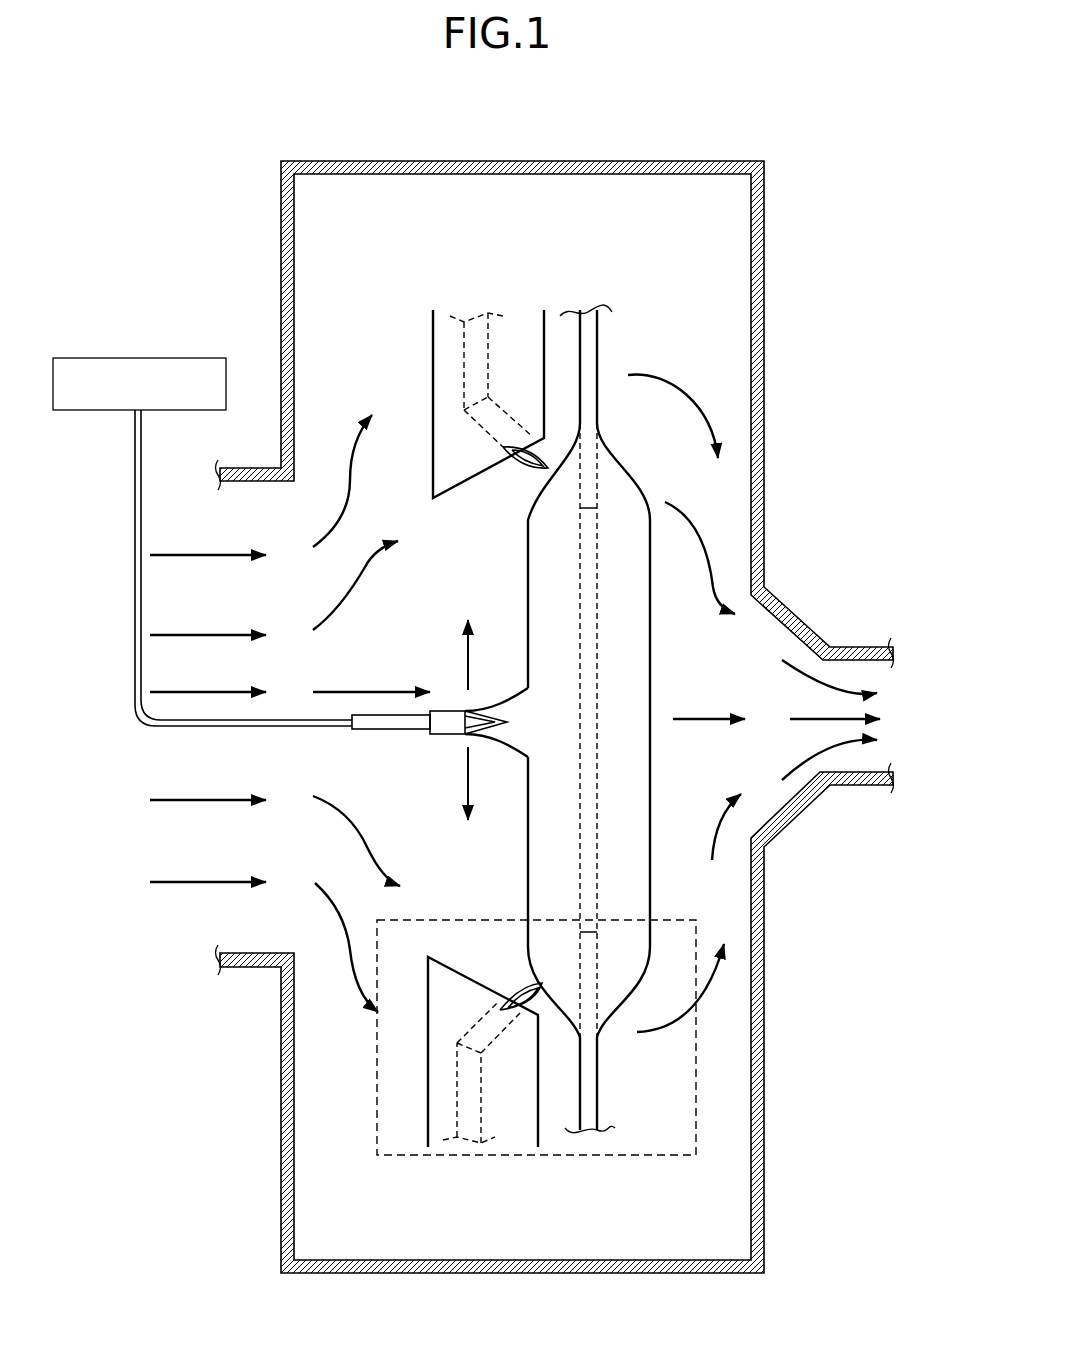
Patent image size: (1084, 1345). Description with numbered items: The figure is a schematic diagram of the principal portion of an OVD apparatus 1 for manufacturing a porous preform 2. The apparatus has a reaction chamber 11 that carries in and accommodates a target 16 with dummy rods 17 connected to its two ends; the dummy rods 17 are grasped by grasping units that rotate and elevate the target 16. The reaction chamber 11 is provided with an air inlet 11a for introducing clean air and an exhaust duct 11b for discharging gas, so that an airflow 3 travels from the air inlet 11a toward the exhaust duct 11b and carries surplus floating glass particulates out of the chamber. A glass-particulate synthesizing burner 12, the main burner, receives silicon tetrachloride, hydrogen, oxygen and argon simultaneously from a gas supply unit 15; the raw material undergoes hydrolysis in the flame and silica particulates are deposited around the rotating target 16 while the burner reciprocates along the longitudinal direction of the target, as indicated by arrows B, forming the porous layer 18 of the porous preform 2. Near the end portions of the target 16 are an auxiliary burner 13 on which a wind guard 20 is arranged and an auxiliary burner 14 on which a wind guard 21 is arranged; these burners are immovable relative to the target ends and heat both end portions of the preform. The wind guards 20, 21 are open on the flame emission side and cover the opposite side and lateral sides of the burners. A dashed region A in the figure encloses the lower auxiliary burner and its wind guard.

The OVD apparatus 1 is at (386, 138).
The porous preform 2 is at (574, 708).
The airflow 3 is at (348, 495).
The reaction chamber 11 is at (660, 161).
The air inlet 11a is at (245, 483).
The exhaust duct 11b is at (900, 680).
The glass-particulate synthesizing burner 12 is at (446, 746).
The auxiliary burner 13 is at (472, 1083).
The auxiliary burner 14 is at (477, 363).
The gas supply unit 15 is at (196, 358).
The target 16 is at (597, 827).
The dummy rods 17 is at (597, 410).
The porous layer 18 is at (636, 872).
The wind guard 20 is at (433, 1053).
The wind guard 21 is at (447, 393).
The region A is at (697, 1057).
The arrows B is at (468, 657).